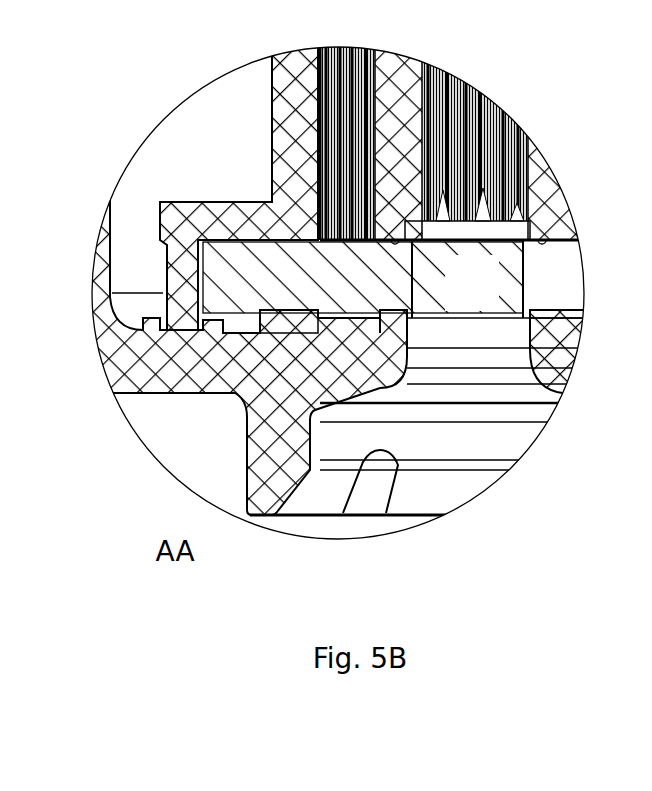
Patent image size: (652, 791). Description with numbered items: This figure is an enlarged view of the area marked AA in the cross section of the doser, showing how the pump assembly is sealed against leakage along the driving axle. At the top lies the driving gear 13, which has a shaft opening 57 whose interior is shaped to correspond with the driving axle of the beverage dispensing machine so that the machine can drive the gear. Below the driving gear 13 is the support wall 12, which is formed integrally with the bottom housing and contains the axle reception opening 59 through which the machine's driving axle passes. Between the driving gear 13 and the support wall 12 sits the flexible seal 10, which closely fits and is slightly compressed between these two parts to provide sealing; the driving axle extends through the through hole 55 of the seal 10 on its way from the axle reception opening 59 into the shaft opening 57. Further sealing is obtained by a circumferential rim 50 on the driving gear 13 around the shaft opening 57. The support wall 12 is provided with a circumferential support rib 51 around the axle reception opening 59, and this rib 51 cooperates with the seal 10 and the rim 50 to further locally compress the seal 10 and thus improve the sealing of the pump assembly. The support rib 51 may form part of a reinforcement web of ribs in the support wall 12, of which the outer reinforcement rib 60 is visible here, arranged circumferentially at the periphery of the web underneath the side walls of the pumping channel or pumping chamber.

The flexible seal 10 is at (218, 253).
The support wall 12 is at (275, 395).
The driving gear 13 is at (567, 241).
The circumferential rim 50 is at (567, 242).
The circumferential support rib 51 is at (317, 233).
The through hole 55 is at (523, 293).
The shaft opening 57 is at (472, 228).
The axle reception opening 59 is at (515, 333).
The outer reinforcement rib 60 is at (257, 327).